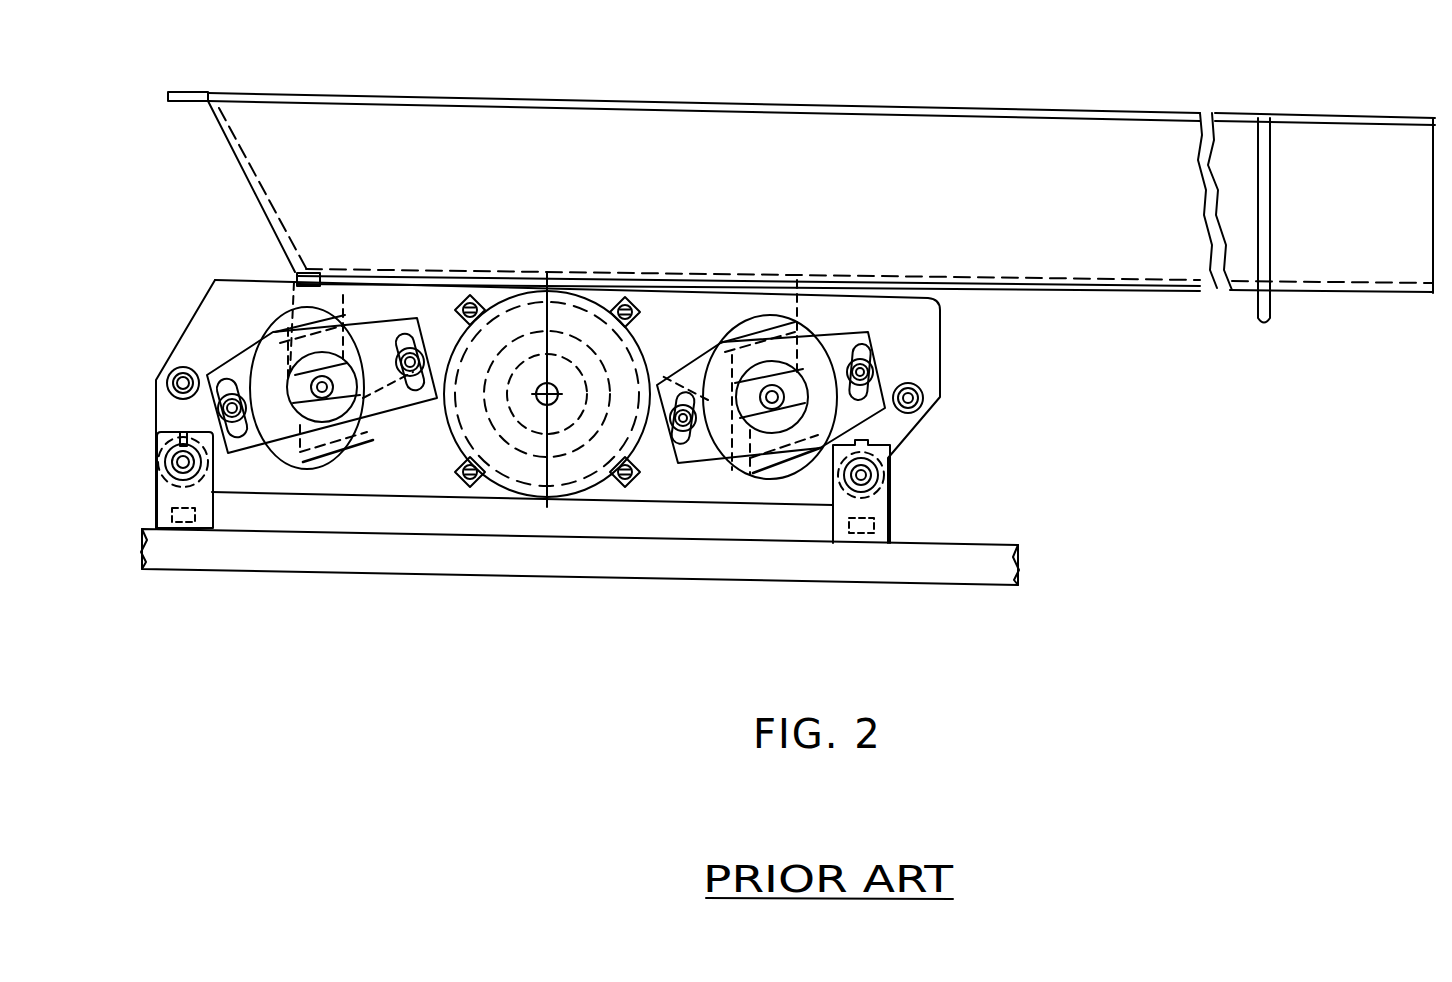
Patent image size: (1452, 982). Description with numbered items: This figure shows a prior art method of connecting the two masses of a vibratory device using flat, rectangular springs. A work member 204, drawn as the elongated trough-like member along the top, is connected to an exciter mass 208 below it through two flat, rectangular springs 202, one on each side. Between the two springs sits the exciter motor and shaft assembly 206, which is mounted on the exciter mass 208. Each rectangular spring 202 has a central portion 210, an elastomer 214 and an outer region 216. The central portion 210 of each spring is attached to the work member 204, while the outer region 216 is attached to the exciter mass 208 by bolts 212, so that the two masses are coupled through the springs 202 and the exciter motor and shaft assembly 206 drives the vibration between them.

The flat rectangular spring 202 is at (295, 423).
The work member 204 is at (1098, 135).
The exciter motor and shaft assembly 206 is at (537, 430).
The exciter mass 208 is at (915, 343).
The central portion 210 is at (347, 362).
The bolts 212 is at (700, 413).
The elastomer 214 is at (383, 428).
The outer region 216 is at (227, 372).